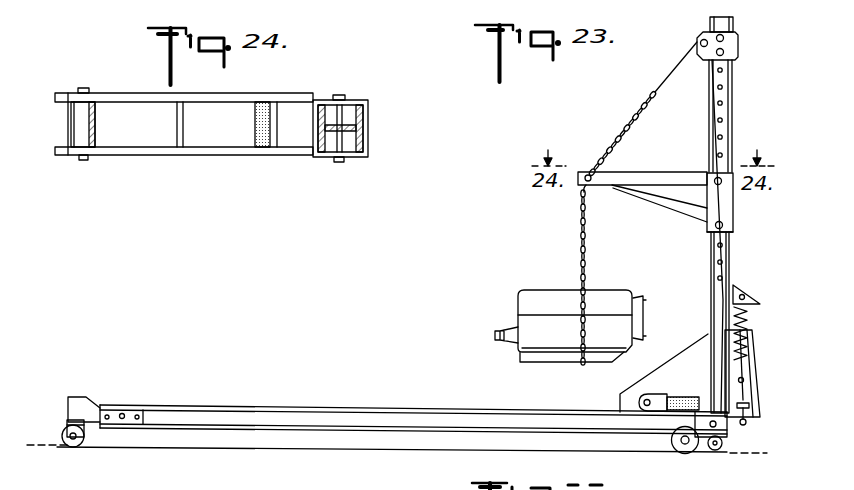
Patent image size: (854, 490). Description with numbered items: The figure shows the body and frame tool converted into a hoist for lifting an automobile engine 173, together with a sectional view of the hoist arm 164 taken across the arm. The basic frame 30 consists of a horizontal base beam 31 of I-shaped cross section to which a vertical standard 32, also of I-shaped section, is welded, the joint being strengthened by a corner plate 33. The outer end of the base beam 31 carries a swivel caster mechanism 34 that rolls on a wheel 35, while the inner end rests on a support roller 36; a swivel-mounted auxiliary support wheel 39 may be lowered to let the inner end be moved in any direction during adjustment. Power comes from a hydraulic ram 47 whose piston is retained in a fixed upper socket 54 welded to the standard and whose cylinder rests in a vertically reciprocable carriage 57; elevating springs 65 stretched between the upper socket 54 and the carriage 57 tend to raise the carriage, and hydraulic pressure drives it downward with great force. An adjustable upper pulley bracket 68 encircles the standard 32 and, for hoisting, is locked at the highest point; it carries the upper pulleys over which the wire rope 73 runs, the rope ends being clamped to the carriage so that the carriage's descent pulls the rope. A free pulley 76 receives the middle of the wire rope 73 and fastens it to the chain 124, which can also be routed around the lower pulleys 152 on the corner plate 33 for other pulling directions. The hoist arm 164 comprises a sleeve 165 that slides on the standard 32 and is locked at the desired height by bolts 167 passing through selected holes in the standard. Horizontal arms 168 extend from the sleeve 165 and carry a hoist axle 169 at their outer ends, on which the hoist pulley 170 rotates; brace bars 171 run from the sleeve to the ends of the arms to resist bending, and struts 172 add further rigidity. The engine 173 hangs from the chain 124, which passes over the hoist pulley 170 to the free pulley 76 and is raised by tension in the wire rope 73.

In FIG. 23, the basic frame 30 is at (298, 404).
In FIG. 23, the base beam 31 is at (232, 404).
In FIG. 24, the standard 32 is at (370, 120).
In FIG. 23, the standard 32 is at (734, 95).
In FIG. 23, the corner plate 33 is at (670, 366).
In FIG. 23, the swivel caster mechanism 34 is at (80, 396).
In FIG. 23, the wheel 35 is at (67, 434).
In FIG. 23, the support roller 36 is at (686, 454).
In FIG. 23, the auxiliary support wheel 39 is at (722, 445).
In FIG. 23, the hydraulic ram 47 is at (756, 341).
In FIG. 23, the upper socket 54 is at (751, 293).
In FIG. 23, the carriage 57 is at (759, 390).
In FIG. 23, the elevating spring 65 is at (748, 323).
In FIG. 23, the upper pulley bracket 68 is at (741, 42).
In FIG. 23, the wire rope 73 is at (722, 145).
In FIG. 23, the free pulley 76 is at (655, 90).
In FIG. 23, the chain 124 is at (580, 235).
In FIG. 23, the lower pulley 152 is at (654, 398).
In FIG. 24, the hoist arm 164 is at (238, 94).
In FIG. 23, the hoist arm 164 is at (738, 229).
In FIG. 24, the sleeve 165 is at (355, 159).
In FIG. 23, the sleeve 165 is at (709, 212).
In FIG. 24, the bolt 167 is at (341, 113).
In FIG. 23, the bolt 167 is at (720, 184).
In FIG. 24, the horizontal arm 168 is at (143, 94).
In FIG. 23, the horizontal arm 168 is at (668, 172).
In FIG. 24, the hoist axle 169 is at (84, 158).
In FIG. 23, the hoist axle 169 is at (603, 176).
In FIG. 24, the hoist pulley 170 is at (95, 124).
In FIG. 23, the hoist pulley 170 is at (591, 185).
In FIG. 23, the brace bar 171 is at (660, 206).
In FIG. 24, the strut 172 is at (257, 124).
In FIG. 23, the automobile engine 173 is at (547, 291).